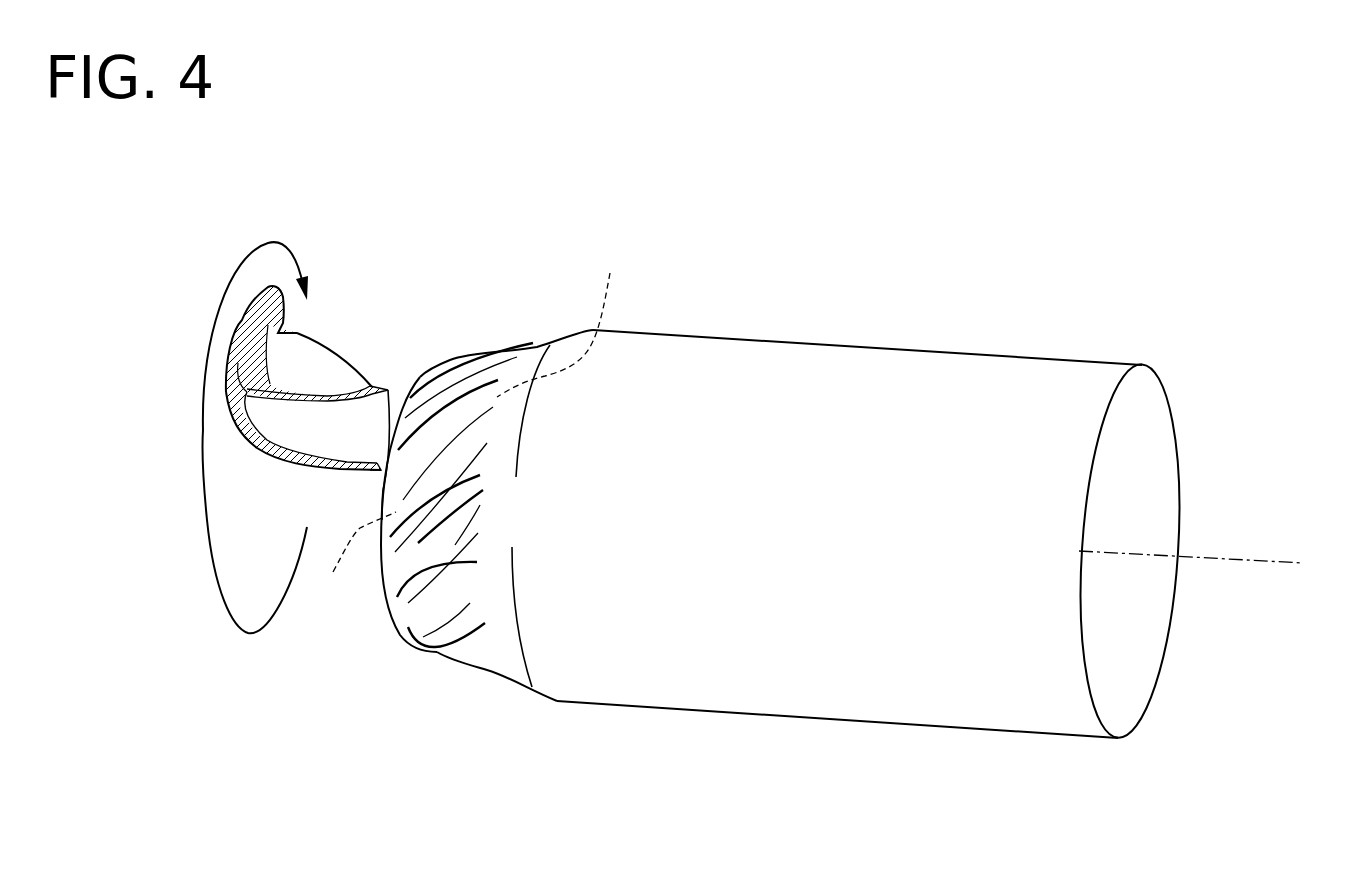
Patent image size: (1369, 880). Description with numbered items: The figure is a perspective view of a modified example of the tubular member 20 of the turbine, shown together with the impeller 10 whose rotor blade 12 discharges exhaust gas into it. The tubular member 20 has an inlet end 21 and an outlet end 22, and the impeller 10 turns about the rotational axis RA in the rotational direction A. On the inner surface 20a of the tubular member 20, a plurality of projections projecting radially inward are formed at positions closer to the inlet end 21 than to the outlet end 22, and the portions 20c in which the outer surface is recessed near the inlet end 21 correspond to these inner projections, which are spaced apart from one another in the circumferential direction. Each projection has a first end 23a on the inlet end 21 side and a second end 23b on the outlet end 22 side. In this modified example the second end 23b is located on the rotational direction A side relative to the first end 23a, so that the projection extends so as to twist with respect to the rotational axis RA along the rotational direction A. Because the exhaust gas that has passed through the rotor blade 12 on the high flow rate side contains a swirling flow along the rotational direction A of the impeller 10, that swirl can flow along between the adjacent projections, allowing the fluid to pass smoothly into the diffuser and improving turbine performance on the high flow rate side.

The impeller 10 is at (369, 278).
The rotor blade 12 is at (297, 413).
The tubular member 20 is at (829, 316).
The inner surface 20a is at (1122, 652).
The recessed portions 20c is at (443, 440).
The inlet end 21 is at (382, 490).
The outlet end 22 is at (1165, 505).
The first end 23a is at (352, 555).
The second end 23b is at (573, 319).
The rotational axis RA is at (1214, 567).
The rotational direction A is at (241, 437).